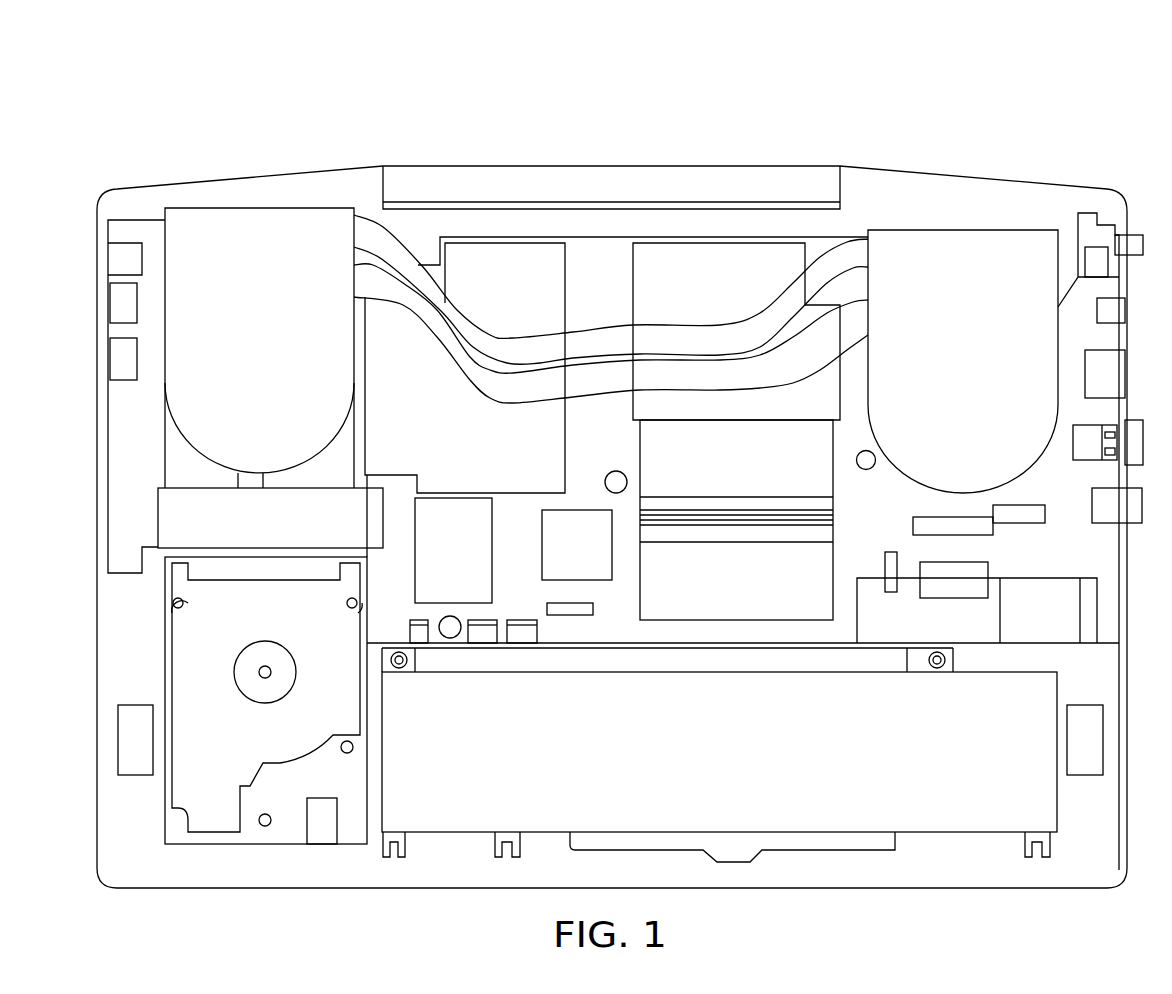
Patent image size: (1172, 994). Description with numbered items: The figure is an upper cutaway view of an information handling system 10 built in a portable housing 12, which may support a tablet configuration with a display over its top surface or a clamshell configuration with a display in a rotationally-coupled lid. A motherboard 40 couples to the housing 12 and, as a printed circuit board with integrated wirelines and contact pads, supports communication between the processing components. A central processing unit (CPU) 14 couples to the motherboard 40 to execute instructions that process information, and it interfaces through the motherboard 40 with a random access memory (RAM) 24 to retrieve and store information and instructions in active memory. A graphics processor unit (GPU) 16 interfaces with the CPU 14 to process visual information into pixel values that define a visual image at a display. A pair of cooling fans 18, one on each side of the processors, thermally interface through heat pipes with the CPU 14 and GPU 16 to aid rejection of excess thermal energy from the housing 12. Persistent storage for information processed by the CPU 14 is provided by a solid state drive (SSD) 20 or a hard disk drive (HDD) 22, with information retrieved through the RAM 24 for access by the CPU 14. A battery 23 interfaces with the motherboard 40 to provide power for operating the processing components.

The information handling system 10 is at (337, 150).
The portable housing 12 is at (975, 178).
The central processing unit (CPU) 14 is at (513, 457).
The graphics processor unit (GPU) 16 is at (785, 478).
The cooling fans 18 is at (975, 370).
The solid state drive (SSD) 20 is at (315, 534).
The hard disk drive (HDD) 22 is at (310, 625).
The battery 23 is at (732, 790).
The random access memory (RAM) 24 is at (467, 589).
The motherboard 40 is at (480, 230).